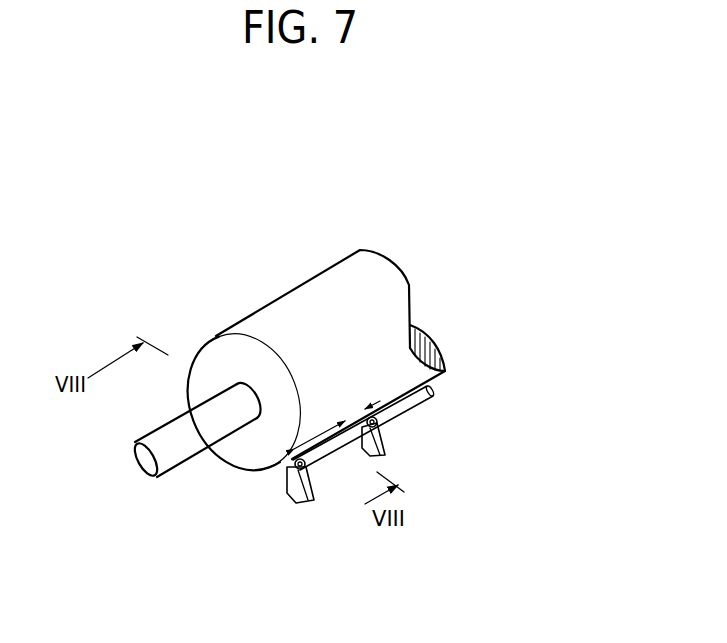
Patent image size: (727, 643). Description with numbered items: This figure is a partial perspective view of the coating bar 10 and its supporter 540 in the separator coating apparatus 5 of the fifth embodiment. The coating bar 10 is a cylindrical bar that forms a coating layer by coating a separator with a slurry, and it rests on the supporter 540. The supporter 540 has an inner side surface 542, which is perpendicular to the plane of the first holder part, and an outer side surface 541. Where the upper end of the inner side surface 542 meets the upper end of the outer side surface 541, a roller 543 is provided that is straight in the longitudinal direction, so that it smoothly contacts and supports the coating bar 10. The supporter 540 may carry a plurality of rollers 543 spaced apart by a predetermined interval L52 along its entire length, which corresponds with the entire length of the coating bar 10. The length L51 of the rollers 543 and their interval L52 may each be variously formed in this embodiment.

The separator coating apparatus 5 is at (280, 205).
The coating bar 10 is at (386, 236).
The supporter 540 is at (392, 438).
The outer side surface 541 is at (314, 500).
The inner side surface 542 is at (287, 483).
The roller 543 is at (418, 400).
The length L51 is at (316, 431).
The interval L52 is at (362, 406).